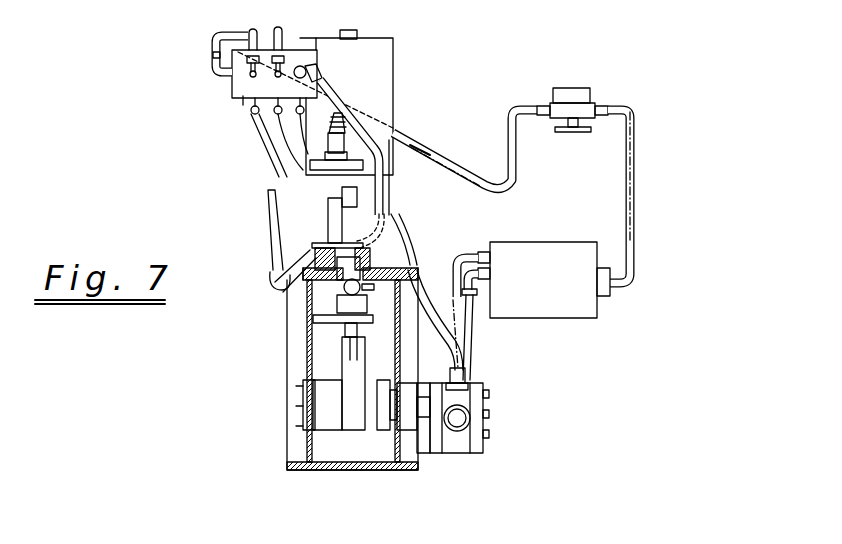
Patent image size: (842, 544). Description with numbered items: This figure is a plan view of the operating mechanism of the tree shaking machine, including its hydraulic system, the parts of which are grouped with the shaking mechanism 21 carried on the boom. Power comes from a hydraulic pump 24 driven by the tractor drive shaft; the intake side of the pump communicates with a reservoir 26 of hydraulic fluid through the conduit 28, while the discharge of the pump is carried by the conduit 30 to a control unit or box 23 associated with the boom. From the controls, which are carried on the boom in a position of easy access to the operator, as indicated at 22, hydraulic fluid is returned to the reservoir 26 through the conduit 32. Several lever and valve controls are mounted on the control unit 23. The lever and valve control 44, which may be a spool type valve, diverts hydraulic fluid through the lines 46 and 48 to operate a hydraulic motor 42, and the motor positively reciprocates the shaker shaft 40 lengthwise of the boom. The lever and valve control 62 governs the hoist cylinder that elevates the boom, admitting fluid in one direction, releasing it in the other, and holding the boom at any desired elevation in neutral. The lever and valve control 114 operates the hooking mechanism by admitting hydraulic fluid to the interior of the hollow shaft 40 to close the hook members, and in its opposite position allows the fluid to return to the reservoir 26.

The shaking mechanism 21 is at (331, 325).
The controls 22 is at (228, 86).
The control unit 23 is at (242, 96).
The hydraulic pump 24 is at (566, 92).
The reservoir 26 is at (558, 313).
The conduit 28 is at (634, 246).
The conduit 30 is at (418, 145).
The conduit 32 is at (380, 133).
The shaker shaft 40 is at (340, 181).
The hydraulic motor 42 is at (478, 450).
The lever and valve control 44 is at (311, 166).
The line 46 is at (452, 354).
The line 48 is at (476, 358).
The lever and valve control 62 is at (278, 118).
The lever and valve control 114 is at (253, 135).